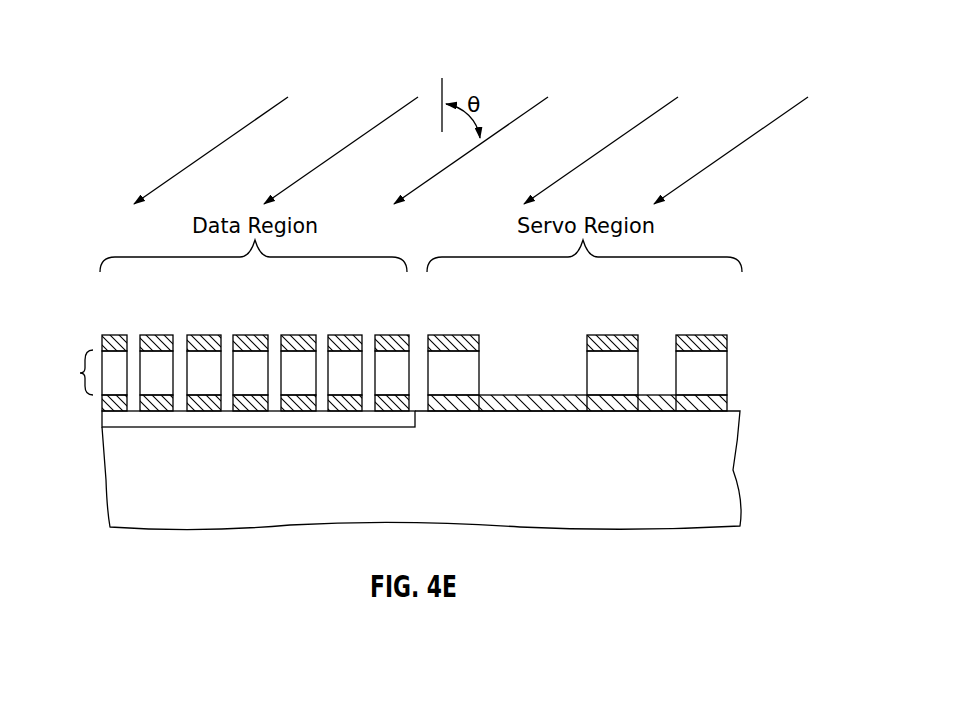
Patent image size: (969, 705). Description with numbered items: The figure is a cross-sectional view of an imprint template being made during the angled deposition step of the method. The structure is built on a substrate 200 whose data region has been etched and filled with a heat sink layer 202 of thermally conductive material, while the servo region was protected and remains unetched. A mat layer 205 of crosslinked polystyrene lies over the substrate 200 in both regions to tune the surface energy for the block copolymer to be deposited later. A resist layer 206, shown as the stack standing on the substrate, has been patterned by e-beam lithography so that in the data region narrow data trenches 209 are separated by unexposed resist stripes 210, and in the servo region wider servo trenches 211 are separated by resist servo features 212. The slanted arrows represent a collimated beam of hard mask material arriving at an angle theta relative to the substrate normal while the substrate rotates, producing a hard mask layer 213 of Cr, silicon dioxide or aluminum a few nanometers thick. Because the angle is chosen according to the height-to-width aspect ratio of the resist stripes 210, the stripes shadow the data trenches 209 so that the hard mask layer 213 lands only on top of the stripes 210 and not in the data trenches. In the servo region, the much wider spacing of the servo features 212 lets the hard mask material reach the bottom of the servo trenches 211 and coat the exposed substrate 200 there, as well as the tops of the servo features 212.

The substrate 200 is at (731, 464).
The heat sink layer 202 is at (245, 421).
The mat layer 205 is at (299, 404).
The resist layer 206 is at (66, 372).
The data trenches 209 is at (182, 343).
The resist stripes 210 is at (157, 386).
The servo trenches 211 is at (556, 353).
The resist servo features 212 is at (466, 386).
The hard mask layer 213 is at (153, 336).